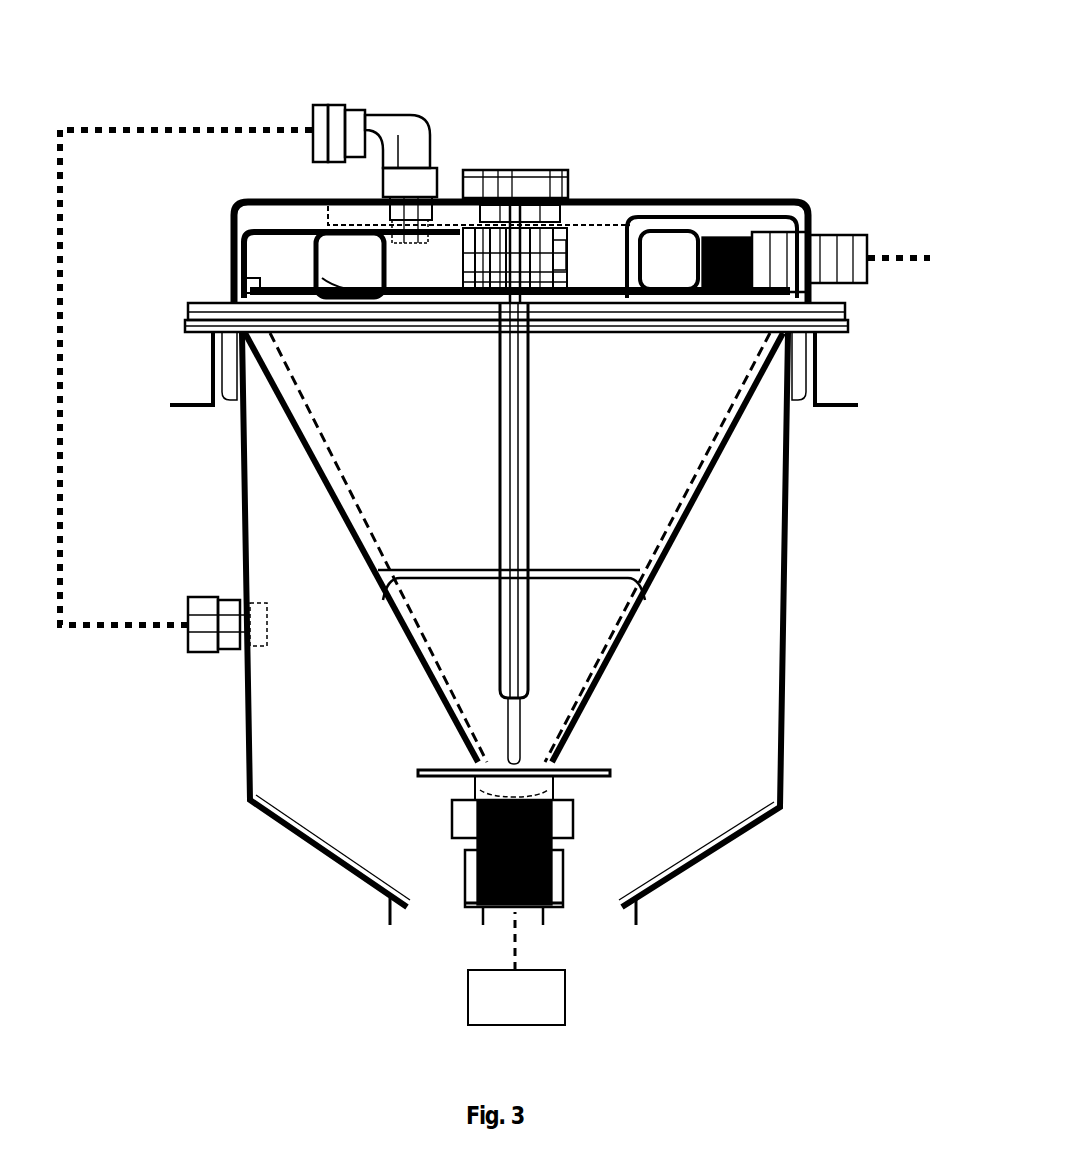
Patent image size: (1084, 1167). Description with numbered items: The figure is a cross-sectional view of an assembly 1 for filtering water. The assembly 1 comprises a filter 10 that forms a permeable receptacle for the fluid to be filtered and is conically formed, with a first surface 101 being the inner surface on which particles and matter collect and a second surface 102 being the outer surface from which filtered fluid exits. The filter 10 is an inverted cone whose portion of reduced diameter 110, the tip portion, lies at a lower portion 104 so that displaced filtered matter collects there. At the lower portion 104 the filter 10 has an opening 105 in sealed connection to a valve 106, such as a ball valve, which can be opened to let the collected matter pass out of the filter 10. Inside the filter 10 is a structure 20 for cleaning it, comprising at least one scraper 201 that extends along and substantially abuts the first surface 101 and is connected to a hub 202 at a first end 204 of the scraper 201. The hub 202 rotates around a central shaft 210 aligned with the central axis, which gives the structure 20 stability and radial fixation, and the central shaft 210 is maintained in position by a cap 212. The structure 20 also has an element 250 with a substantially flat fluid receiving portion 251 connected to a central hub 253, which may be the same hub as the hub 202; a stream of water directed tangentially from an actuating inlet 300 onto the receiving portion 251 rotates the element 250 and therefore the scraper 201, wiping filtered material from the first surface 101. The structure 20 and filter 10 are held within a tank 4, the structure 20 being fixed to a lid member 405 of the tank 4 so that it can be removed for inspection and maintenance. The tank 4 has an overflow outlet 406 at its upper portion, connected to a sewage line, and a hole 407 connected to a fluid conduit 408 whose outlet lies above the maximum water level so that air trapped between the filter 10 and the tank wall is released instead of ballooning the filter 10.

The assembly 1 is at (510, 137).
The tank 4 is at (787, 736).
The filter 10 is at (584, 445).
The structure 20 is at (345, 478).
The first surface 101 is at (697, 486).
The second surface 102 is at (682, 541).
The lower portion 104 is at (543, 780).
The opening 105 is at (513, 912).
The valve 106 is at (567, 995).
The portion of reduced diameter 110 is at (483, 780).
The scraper 201 is at (452, 713).
The hub 202 is at (558, 267).
The first end 204 is at (248, 340).
The central shaft 210 is at (503, 553).
The cap 212 is at (483, 172).
The element 250 is at (353, 260).
The fluid receiving portion 251 is at (362, 280).
The central hub 253 is at (560, 260).
The actuating inlet 300 is at (758, 240).
The lid member 405 is at (232, 232).
The overflow outlet 406 is at (822, 237).
The hole 407 is at (187, 628).
The fluid conduit 408 is at (62, 522).